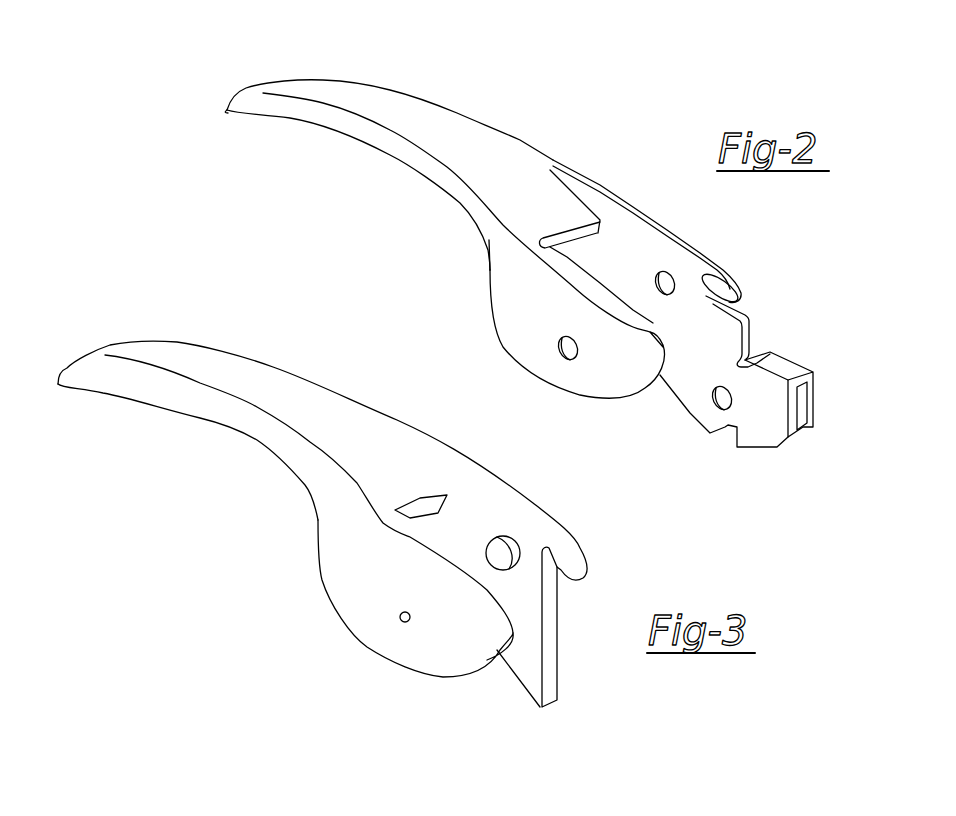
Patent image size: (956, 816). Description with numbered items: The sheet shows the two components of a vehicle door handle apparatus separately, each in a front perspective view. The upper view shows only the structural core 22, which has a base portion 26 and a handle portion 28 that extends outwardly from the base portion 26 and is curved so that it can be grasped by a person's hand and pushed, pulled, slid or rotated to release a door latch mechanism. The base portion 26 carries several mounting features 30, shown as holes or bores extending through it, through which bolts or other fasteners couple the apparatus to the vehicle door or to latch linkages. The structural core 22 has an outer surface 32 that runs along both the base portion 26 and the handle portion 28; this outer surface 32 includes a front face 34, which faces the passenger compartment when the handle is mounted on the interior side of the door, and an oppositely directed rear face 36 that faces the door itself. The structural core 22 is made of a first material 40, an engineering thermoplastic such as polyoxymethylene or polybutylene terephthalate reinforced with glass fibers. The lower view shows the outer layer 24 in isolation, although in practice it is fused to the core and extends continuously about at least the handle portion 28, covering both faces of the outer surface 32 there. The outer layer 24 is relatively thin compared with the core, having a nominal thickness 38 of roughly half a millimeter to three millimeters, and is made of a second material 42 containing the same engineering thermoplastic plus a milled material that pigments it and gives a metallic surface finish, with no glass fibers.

In FIG. 2, the structural core 22 is at (237, 213).
In FIG. 3, the outer layer 24 is at (158, 523).
In FIG. 2, the base portion 26 is at (750, 470).
In FIG. 2, the handle portion 28 is at (322, 30).
In FIG. 2, the mounting features 30 is at (556, 345).
In FIG. 2, the outer surface 32 is at (528, 178).
In FIG. 2, the front face 34 is at (488, 226).
In FIG. 2, the rear face 36 is at (608, 185).
In FIG. 3, the nominal thickness 38 is at (573, 710).
In FIG. 2, the first material 40 is at (318, 118).
In FIG. 3, the second material 42 is at (198, 410).